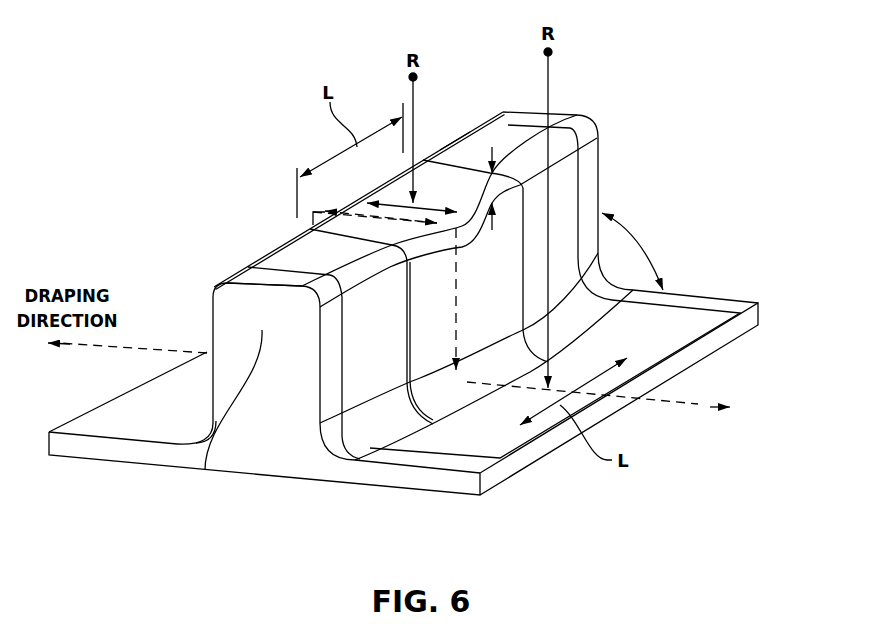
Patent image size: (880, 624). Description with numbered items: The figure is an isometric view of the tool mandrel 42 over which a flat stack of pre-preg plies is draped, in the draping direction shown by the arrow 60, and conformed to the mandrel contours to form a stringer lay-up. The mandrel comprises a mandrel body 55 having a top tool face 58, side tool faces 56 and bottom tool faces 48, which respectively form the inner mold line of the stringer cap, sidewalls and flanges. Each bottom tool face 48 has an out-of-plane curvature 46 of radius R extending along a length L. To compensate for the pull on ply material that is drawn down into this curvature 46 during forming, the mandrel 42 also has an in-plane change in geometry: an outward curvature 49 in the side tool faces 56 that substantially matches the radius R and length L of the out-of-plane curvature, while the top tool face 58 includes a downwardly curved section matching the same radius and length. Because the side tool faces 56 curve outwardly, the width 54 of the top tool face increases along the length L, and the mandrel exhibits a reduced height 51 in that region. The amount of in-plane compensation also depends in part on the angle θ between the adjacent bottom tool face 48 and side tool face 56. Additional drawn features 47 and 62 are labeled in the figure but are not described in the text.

The tool mandrel 42 is at (238, 158).
The out-of-plane curvature 46 is at (207, 351).
The web cap far edge 47 is at (445, 160).
The bottom tool faces 48 is at (127, 433).
The outward curvature 49 is at (494, 270).
The reduced height 51 is at (492, 147).
The width of the top tool face 54 is at (427, 203).
The mandrel body 55 is at (263, 462).
The side tool faces 56 is at (371, 358).
The top tool face 58 is at (294, 261).
The arrow 60 is at (698, 404).
The fillet ply 62 is at (205, 470).